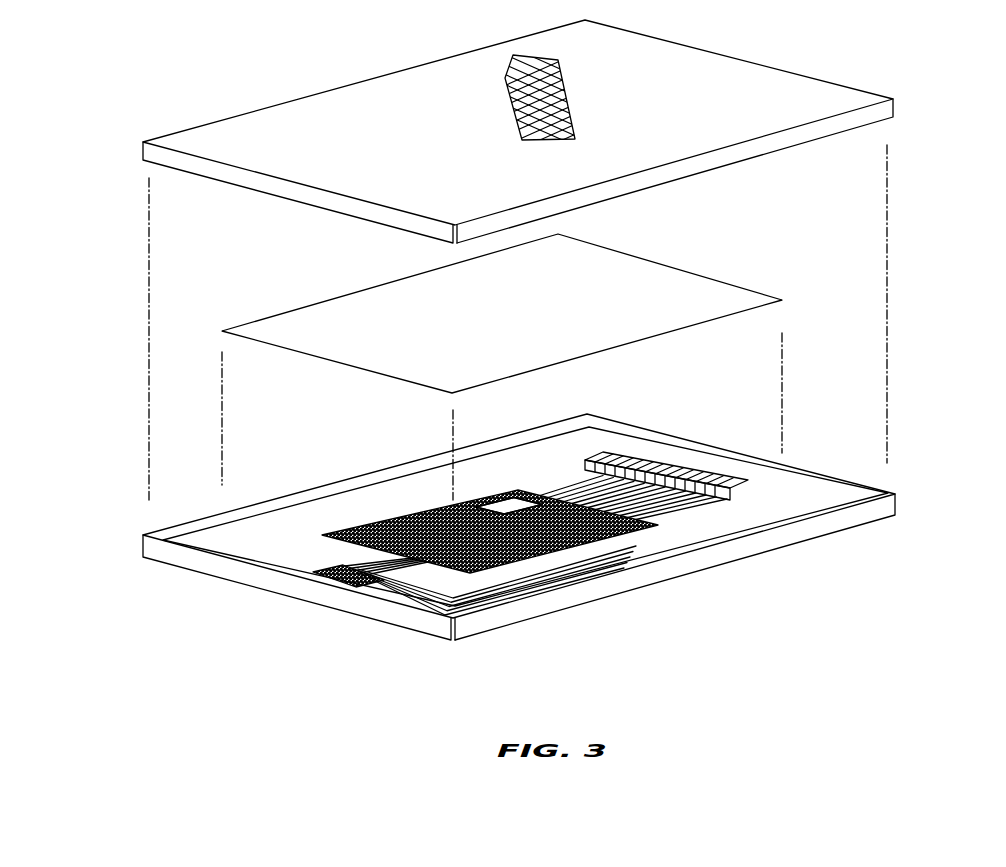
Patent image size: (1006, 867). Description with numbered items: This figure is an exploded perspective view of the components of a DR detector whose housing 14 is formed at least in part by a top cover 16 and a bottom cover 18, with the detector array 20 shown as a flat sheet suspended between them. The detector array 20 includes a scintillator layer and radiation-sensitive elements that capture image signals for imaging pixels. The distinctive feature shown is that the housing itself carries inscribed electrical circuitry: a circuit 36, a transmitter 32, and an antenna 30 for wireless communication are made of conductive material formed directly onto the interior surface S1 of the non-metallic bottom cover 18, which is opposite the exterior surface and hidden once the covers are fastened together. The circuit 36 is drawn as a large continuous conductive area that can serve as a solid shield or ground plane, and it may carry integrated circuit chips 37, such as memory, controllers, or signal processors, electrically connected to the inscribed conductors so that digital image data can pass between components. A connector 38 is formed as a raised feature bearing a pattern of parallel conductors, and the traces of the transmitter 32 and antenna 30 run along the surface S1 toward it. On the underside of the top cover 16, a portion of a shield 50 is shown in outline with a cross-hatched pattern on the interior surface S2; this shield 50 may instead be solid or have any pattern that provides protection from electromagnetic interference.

The housing 14 is at (254, 93).
The top cover 16 is at (895, 100).
The bottom cover 18 is at (897, 495).
The detector array 20 is at (412, 343).
The antenna 30 is at (565, 582).
The transmitter 32 is at (361, 588).
The circuit 36 is at (407, 516).
The integrated circuit chips 37 is at (510, 504).
The connector 38 is at (645, 461).
The shield 50 is at (565, 70).
The interior surface S1 is at (803, 493).
The interior surface S2 is at (777, 155).